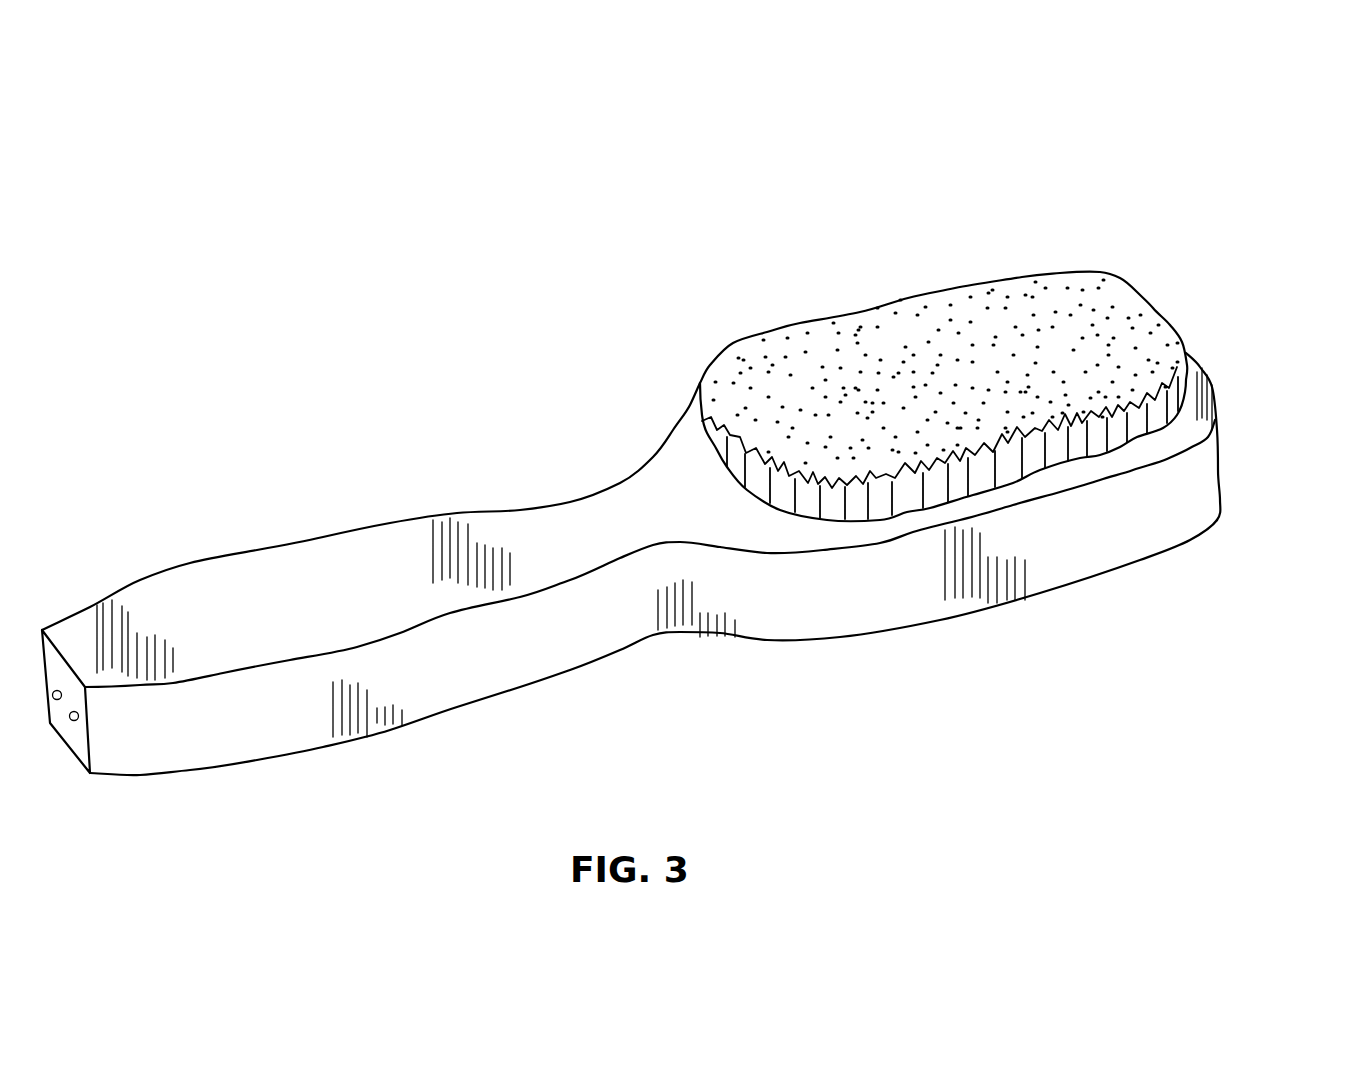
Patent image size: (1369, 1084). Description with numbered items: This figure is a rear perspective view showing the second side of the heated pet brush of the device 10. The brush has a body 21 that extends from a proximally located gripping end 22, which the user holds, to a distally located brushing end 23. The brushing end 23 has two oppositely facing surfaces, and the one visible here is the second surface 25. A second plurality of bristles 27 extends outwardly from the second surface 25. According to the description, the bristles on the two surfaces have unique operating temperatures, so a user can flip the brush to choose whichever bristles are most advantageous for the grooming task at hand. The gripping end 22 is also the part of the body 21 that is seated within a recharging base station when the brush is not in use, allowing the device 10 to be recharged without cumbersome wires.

The device 10 is at (1344, 68).
The body 21 is at (886, 918).
The gripping end 22 is at (205, 597).
The brushing end 23 is at (1025, 558).
The second surface 25 is at (1117, 126).
The second plurality of bristles 27 is at (898, 347).